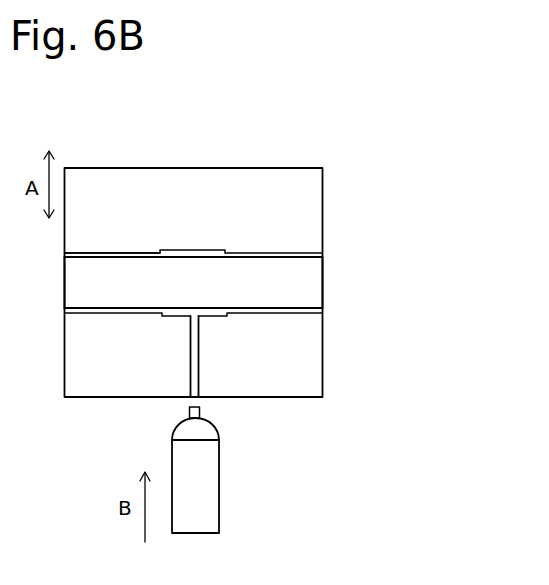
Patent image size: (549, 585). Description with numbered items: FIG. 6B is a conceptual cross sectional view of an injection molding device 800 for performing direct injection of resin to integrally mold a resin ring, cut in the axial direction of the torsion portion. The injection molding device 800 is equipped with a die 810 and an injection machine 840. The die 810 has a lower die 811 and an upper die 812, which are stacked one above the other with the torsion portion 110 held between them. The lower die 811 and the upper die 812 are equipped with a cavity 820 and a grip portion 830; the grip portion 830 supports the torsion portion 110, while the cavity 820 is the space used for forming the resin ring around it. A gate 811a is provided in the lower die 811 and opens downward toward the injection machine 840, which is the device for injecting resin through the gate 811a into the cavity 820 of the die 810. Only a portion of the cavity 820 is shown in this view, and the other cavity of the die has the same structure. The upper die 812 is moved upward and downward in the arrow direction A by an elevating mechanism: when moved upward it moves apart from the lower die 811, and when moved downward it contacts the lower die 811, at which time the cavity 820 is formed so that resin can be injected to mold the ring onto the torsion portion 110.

The injection molding device 800 is at (233, 274).
The die 810 is at (260, 339).
The upper die 812 is at (298, 229).
The lower die 811 is at (298, 339).
The gate 811a is at (198, 348).
The cavity 820 is at (199, 250).
The grip portion 830 is at (126, 253).
The torsion portion 110 is at (80, 282).
The injection machine 840 is at (220, 483).